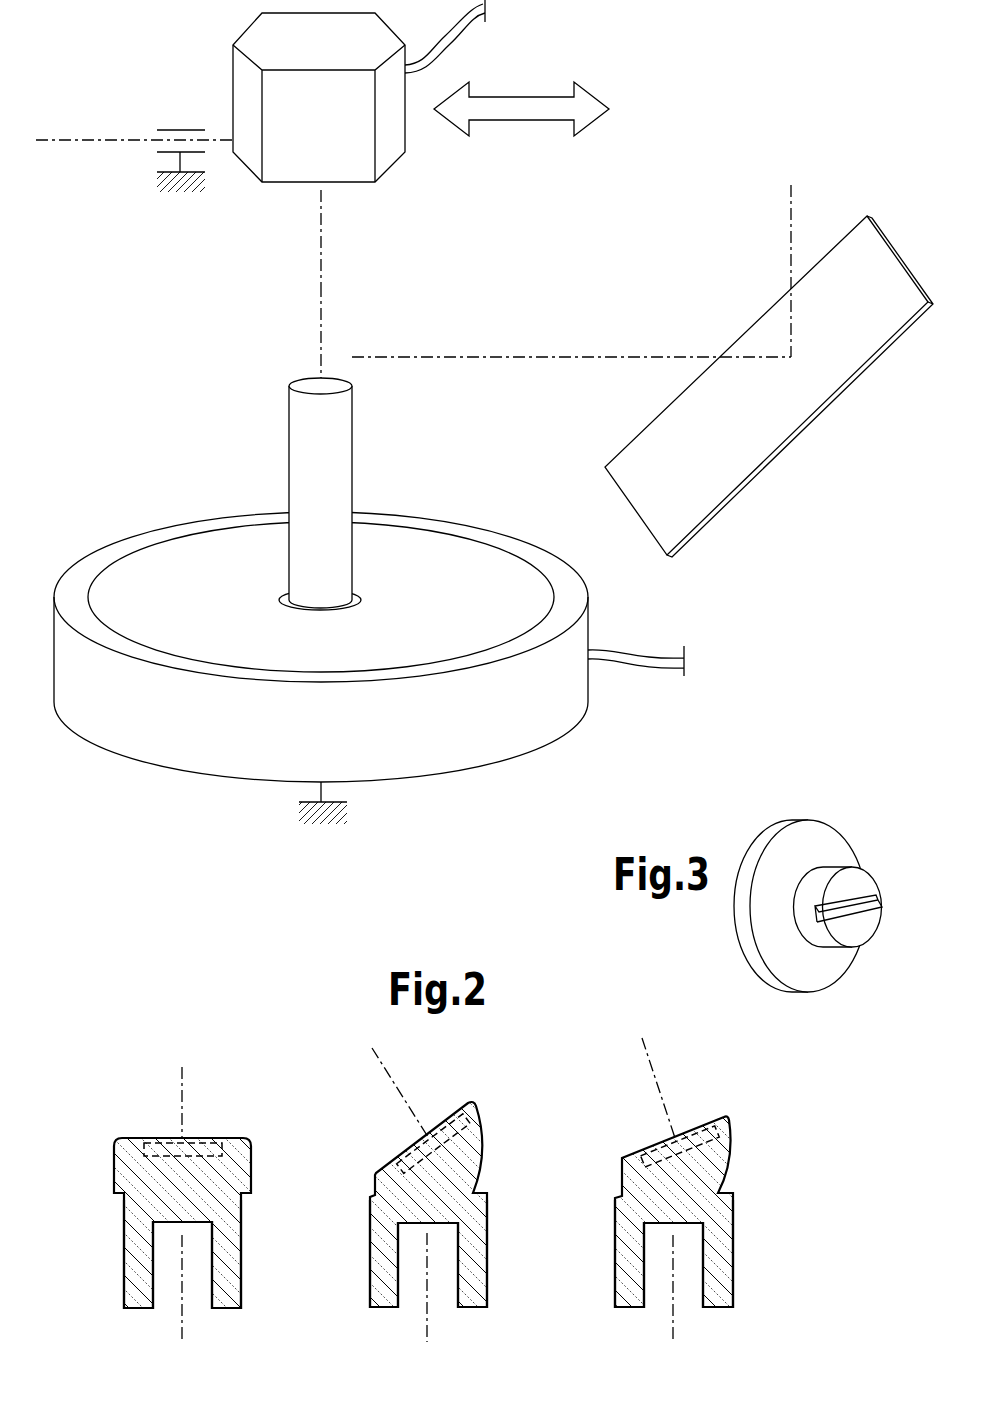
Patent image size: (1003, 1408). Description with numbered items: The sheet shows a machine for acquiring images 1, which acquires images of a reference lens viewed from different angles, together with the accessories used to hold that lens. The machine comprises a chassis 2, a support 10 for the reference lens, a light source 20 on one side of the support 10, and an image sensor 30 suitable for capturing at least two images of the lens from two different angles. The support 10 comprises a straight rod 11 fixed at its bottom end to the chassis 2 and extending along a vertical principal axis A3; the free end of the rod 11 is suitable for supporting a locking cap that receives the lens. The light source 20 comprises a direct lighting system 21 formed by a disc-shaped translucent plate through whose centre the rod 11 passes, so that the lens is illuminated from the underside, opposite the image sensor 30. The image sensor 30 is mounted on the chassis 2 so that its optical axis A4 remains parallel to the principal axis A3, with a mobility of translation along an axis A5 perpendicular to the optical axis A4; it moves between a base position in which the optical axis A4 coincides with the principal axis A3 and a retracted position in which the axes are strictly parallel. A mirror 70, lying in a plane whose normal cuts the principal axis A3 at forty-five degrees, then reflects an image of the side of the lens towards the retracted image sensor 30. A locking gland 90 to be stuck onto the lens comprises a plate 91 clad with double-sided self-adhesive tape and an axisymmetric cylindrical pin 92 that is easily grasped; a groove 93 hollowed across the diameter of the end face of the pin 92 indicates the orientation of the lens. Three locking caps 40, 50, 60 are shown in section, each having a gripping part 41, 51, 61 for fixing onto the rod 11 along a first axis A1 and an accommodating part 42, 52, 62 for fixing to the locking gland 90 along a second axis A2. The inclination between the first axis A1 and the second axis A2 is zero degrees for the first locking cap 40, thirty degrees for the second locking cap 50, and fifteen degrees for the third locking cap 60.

In FIG. 1, the machine for acquiring images 1 is at (732, 67).
In FIG. 1, the chassis 2 is at (172, 171).
In FIG. 1, the support 10 is at (330, 494).
In FIG. 1, the rod 11 is at (289, 452).
In FIG. 1, the light source 20 is at (369, 620).
In FIG. 1, the direct lighting system 21 is at (440, 547).
In FIG. 1, the image sensor 30 is at (230, 93).
In FIG. 1, the mirror 70 is at (758, 316).
In FIG. 3, the locking gland 90 is at (796, 871).
In FIG. 3, the plate 91 is at (743, 943).
In FIG. 3, the pin 92 is at (877, 935).
In FIG. 3, the groove 93 is at (880, 902).
In FIG. 2, the first locking cap 40 is at (175, 1211).
In FIG. 2, the gripping part 41 is at (242, 1233).
In FIG. 2, the accommodating part 42 is at (252, 1172).
In FIG. 2, the second locking cap 50 is at (463, 1175).
In FIG. 2, the gripping part 51 is at (488, 1257).
In FIG. 2, the accommodating part 52 is at (483, 1167).
In FIG. 2, the third locking cap 60 is at (724, 1212).
In FIG. 2, the gripping part 61 is at (734, 1270).
In FIG. 2, the accommodating part 62 is at (728, 1157).
In FIG. 2, the first axis A1 is at (182, 1330).
In FIG. 2, the second axis A2 is at (180, 1085).
In FIG. 1, the principal axis A3 is at (320, 347).
In FIG. 1, the optical axis A4 is at (320, 217).
In FIG. 1, the translation axis A5 is at (87, 140).